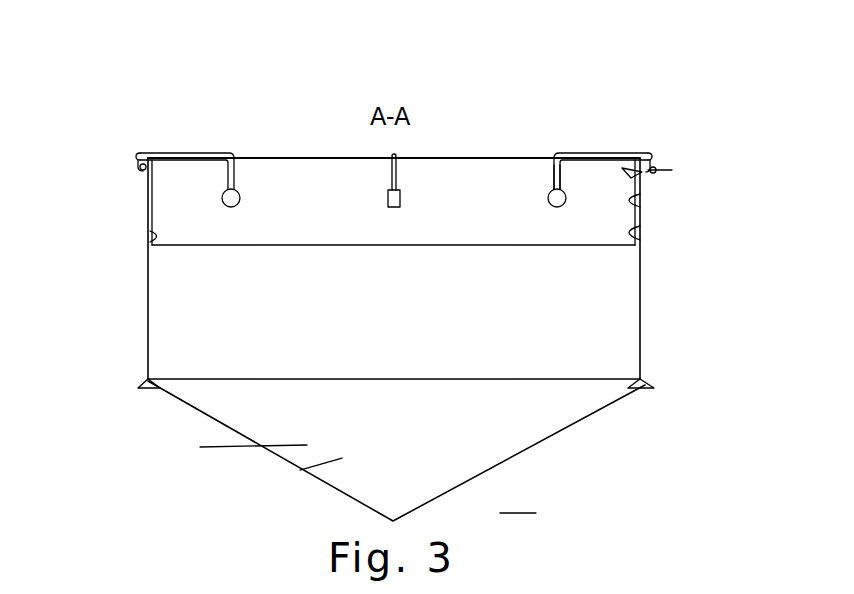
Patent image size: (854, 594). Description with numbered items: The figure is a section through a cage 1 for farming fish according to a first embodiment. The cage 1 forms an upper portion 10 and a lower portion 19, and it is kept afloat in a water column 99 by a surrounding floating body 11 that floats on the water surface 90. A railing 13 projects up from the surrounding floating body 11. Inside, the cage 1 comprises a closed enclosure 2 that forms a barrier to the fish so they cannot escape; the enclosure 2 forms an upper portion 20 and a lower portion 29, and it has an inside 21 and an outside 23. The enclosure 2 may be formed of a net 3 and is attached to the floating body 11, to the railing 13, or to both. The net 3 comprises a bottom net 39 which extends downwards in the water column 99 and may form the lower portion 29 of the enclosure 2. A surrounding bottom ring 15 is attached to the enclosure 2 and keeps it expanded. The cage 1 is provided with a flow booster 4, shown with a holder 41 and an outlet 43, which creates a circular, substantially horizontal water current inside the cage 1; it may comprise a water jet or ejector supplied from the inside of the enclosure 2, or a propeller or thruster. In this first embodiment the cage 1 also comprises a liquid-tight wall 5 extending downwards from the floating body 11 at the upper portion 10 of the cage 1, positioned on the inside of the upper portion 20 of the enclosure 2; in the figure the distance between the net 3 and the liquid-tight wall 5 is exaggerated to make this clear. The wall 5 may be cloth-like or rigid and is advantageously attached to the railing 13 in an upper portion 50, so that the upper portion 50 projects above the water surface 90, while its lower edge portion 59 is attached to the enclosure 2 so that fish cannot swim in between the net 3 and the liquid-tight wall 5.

The cage 1 is at (247, 109).
The closed enclosure 2 is at (228, 259).
The net 3 is at (596, 325).
The flow booster 4 is at (628, 153).
The liquid-tight wall 5 is at (640, 200).
The upper portion 10 is at (200, 208).
The surrounding floating body 11 is at (145, 173).
The railing 13 is at (652, 158).
The surrounding bottom ring 15 is at (148, 387).
The lower portion 19 is at (200, 447).
The upper portion 20 is at (275, 203).
The inside 21 is at (148, 240).
The outside 23 is at (148, 300).
The lower portion 29 is at (300, 470).
The bottom net 39 is at (345, 493).
The holder 41 is at (583, 153).
The outlet 43 is at (566, 206).
The upper portion 50 is at (642, 172).
The lower edge portion 59 is at (640, 232).
The water surface 90 is at (146, 170).
The water column 99 is at (518, 502).